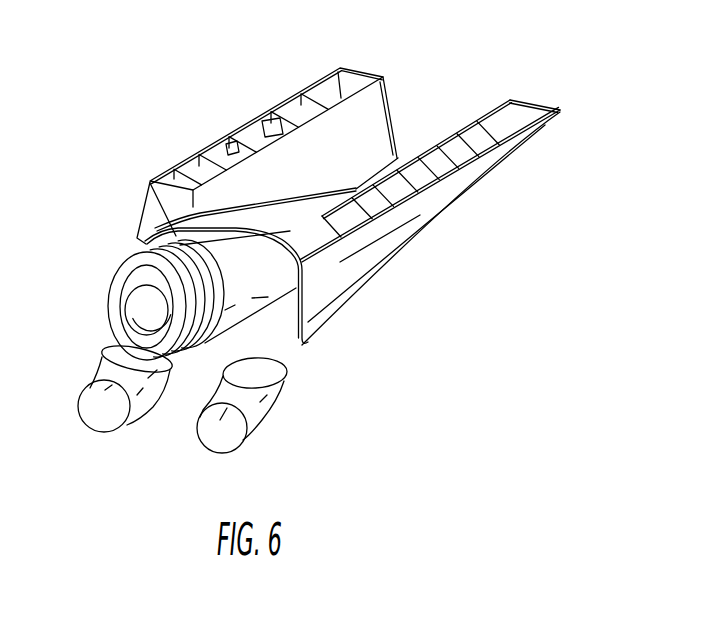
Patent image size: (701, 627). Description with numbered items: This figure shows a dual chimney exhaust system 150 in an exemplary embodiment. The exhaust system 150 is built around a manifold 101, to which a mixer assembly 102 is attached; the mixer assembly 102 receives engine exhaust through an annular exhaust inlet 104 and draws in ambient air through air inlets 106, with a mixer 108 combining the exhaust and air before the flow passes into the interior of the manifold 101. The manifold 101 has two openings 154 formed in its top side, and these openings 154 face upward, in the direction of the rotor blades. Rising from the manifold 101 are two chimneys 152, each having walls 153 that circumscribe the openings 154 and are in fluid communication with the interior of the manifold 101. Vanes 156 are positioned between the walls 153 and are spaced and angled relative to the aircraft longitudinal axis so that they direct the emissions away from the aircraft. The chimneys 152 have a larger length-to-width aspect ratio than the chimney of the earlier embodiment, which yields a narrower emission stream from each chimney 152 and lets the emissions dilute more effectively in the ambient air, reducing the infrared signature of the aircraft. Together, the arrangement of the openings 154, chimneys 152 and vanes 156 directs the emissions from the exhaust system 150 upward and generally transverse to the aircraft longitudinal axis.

The manifold 101 is at (362, 265).
The mixer assembly 102 is at (183, 243).
The annular exhaust inlet 104 is at (133, 314).
The air inlets 106 is at (100, 386).
The mixer 108 is at (268, 308).
The dual chimney exhaust system 150 is at (558, 99).
The chimneys 152 is at (417, 205).
The walls 153 is at (372, 222).
The openings 154 is at (244, 218).
The vanes 156 is at (482, 148).